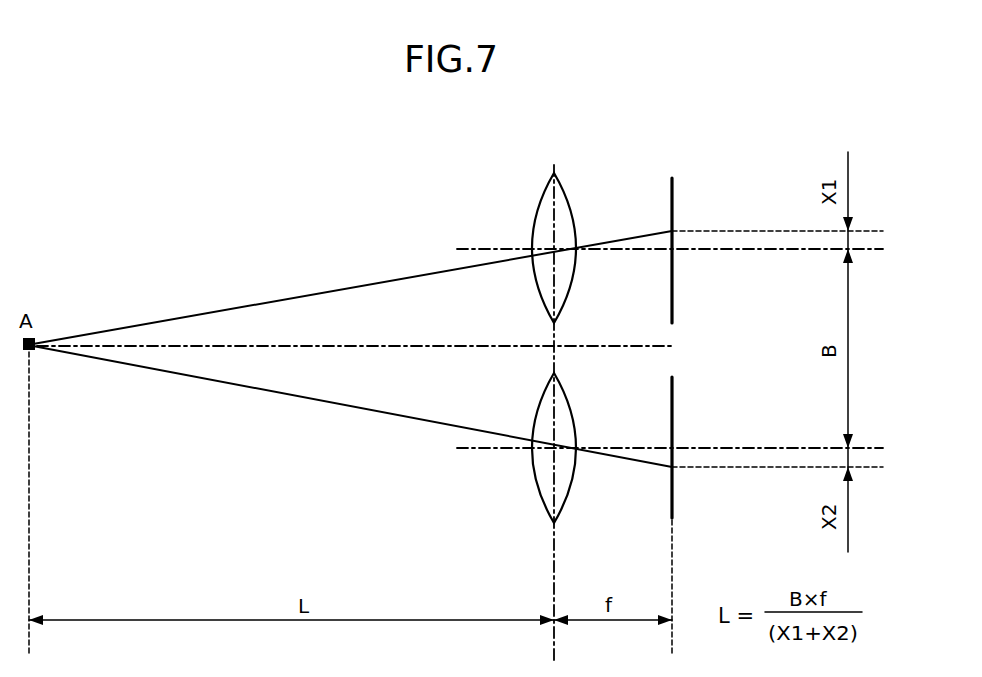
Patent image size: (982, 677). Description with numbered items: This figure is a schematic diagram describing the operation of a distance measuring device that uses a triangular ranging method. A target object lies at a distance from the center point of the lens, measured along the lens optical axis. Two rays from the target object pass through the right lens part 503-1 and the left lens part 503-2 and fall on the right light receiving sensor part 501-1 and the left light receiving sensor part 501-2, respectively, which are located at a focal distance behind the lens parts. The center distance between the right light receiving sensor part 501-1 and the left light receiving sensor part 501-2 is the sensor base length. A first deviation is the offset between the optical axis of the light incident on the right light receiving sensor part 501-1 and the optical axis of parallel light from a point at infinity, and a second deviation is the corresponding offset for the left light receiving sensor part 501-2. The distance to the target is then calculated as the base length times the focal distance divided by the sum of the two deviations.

The right light receiving sensor part 501-1 is at (675, 197).
The left light receiving sensor part 501-2 is at (675, 396).
The right lens part 503-1 is at (550, 180).
The left lens part 503-2 is at (548, 514).